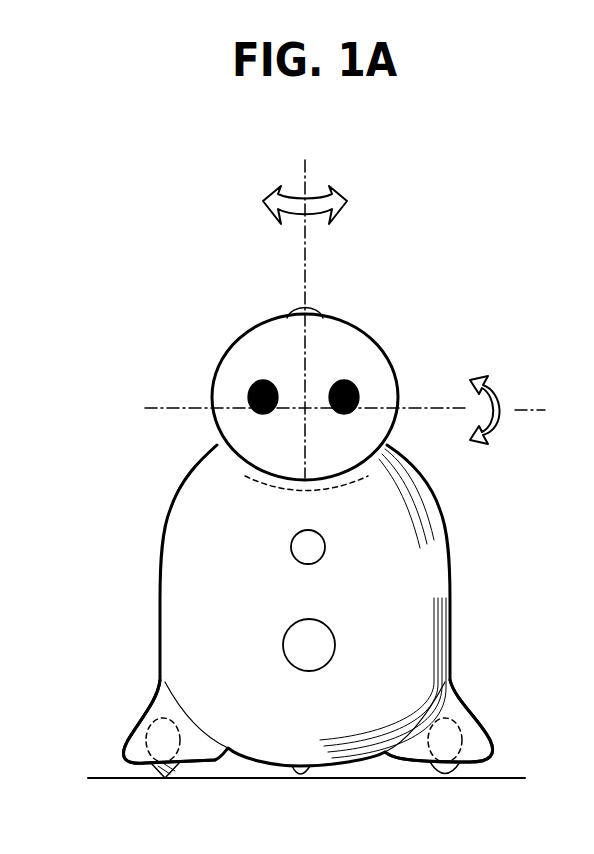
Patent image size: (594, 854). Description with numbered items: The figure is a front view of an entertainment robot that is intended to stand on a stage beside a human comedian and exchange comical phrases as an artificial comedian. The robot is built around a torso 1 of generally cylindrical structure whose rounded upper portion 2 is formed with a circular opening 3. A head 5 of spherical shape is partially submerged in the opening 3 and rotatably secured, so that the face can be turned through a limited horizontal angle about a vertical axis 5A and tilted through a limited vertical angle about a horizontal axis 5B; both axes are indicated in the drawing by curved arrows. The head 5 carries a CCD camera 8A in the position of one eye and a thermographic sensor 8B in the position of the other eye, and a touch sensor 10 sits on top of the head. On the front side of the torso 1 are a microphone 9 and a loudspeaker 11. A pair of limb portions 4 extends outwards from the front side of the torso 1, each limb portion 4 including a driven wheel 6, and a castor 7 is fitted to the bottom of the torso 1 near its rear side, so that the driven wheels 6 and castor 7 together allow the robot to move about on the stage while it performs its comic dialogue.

The torso 1 is at (445, 573).
The rounded upper portion 2 is at (182, 480).
The circular opening 3 is at (268, 485).
The limb portions 4 is at (122, 738).
The head 5 is at (345, 322).
The vertical axis 5A is at (306, 173).
The horizontal axis 5B is at (528, 410).
The driven wheel 6 is at (163, 778).
The castor 7 is at (300, 778).
The CCD camera 8A is at (257, 385).
The thermographic sensor 8B is at (351, 385).
The microphone 9 is at (326, 548).
The touch sensor 10 is at (297, 312).
The loudspeaker 11 is at (336, 641).